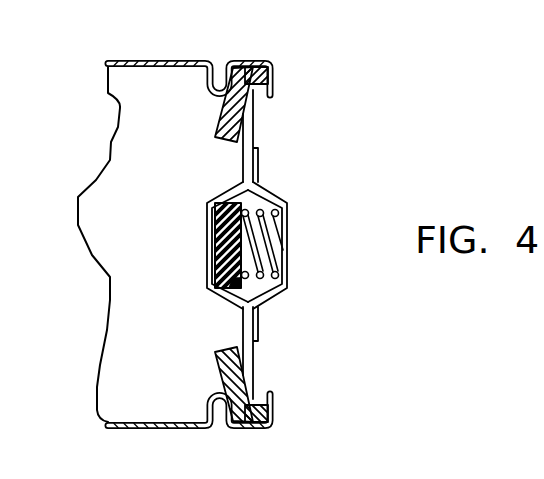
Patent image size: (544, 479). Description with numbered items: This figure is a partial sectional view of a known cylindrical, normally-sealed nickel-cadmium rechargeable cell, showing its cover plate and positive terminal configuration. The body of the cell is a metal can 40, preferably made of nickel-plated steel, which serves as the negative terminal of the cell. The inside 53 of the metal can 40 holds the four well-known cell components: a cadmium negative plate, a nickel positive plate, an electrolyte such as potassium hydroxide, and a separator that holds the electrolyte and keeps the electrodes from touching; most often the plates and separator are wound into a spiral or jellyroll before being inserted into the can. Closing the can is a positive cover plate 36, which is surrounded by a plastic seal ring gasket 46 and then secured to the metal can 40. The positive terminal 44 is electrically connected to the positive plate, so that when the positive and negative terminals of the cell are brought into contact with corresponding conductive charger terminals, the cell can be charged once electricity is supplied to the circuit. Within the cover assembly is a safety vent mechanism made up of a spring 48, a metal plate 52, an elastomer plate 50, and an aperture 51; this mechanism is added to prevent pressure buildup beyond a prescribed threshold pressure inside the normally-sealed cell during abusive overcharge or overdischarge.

The metal can 40 is at (148, 60).
The plastic seal ring gasket 46 is at (268, 77).
The positive cover plate 36 is at (222, 187).
The elastomer plate 50 is at (196, 254).
The aperture 51 is at (214, 212).
The positive terminal 44 is at (287, 215).
The spring 48 is at (267, 250).
The metal plate 52 is at (244, 288).
The inside of metal can 53 is at (185, 321).